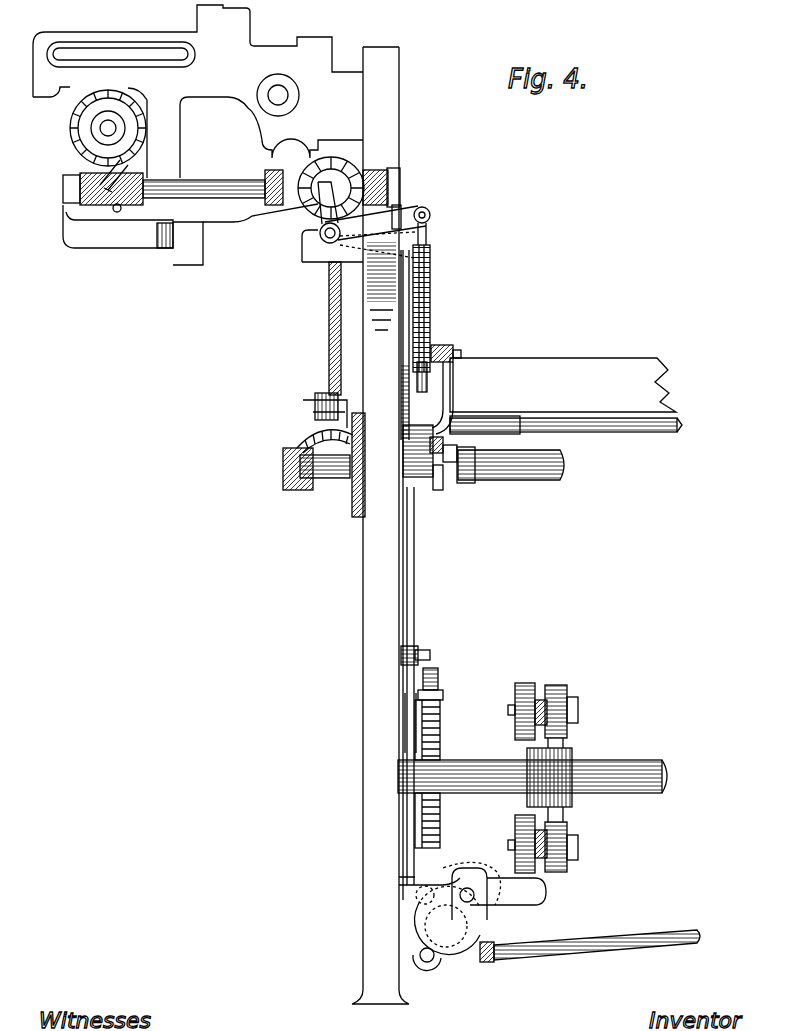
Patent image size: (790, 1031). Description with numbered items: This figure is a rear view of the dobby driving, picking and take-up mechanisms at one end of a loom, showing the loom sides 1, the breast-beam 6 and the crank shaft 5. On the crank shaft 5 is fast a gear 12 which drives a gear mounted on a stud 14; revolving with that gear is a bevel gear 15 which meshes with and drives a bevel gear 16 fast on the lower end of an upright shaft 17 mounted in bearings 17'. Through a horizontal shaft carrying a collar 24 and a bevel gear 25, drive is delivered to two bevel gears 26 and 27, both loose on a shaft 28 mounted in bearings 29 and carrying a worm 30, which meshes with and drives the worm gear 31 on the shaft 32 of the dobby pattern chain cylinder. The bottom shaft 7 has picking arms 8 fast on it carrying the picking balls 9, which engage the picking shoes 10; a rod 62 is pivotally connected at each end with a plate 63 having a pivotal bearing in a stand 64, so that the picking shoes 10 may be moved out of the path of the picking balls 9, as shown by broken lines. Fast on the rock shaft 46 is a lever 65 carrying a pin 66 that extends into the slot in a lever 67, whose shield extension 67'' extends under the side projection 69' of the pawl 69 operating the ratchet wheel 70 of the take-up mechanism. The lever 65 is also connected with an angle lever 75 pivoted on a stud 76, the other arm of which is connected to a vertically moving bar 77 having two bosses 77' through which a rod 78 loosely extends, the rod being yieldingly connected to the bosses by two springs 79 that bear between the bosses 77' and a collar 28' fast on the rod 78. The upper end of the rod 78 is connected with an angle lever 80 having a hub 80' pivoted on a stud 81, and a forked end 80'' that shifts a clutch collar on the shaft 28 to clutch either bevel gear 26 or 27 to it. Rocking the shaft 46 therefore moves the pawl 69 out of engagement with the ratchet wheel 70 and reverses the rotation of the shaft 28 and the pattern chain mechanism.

The loom side 1 is at (370, 635).
The crank shaft 5 is at (540, 479).
The breast-beam 6 is at (596, 368).
The bottom shaft 7 is at (605, 770).
The picking arm 8 is at (561, 690).
The picking ball 9 is at (520, 688).
The picking shoe 10 is at (505, 868).
The gear 12 is at (356, 484).
The stud 14 is at (334, 476).
The bevel gear 15 is at (290, 479).
The bevel gear 16 is at (308, 436).
The upright shaft 17 is at (312, 328).
The bearings 17' is at (306, 400).
The collar 24 is at (451, 403).
The bevel gear 25 is at (342, 160).
The bevel gear 26 is at (302, 210).
The bevel gear 27 is at (366, 171).
The shaft 28 is at (204, 176).
The spring rod 28' is at (446, 308).
The bearings 29 is at (68, 186).
The worm 30 is at (82, 206).
The worm gear 31 is at (76, 122).
The shaft 32 is at (100, 132).
The rock shaft 46 is at (645, 428).
The rod 62 is at (625, 940).
The plate 63 is at (480, 900).
The stand 64 is at (412, 910).
The lever 65 is at (426, 495).
The pin 66 is at (401, 490).
The lever 67 is at (430, 686).
The shield extension 67'' is at (370, 734).
The pawl 69 is at (432, 861).
The side projection 69' is at (375, 691).
The ratchet wheel 70 is at (439, 677).
The angle lever 75 is at (440, 375).
The stud 76 is at (470, 425).
The vertically moving bar 77 is at (389, 345).
The bosses 77' is at (416, 310).
The rod 78 is at (430, 224).
The springs 79 is at (430, 280).
The angle lever 80 is at (349, 228).
The hub 80' is at (316, 258).
The forked end 80'' is at (279, 199).
The stud 81 is at (325, 240).